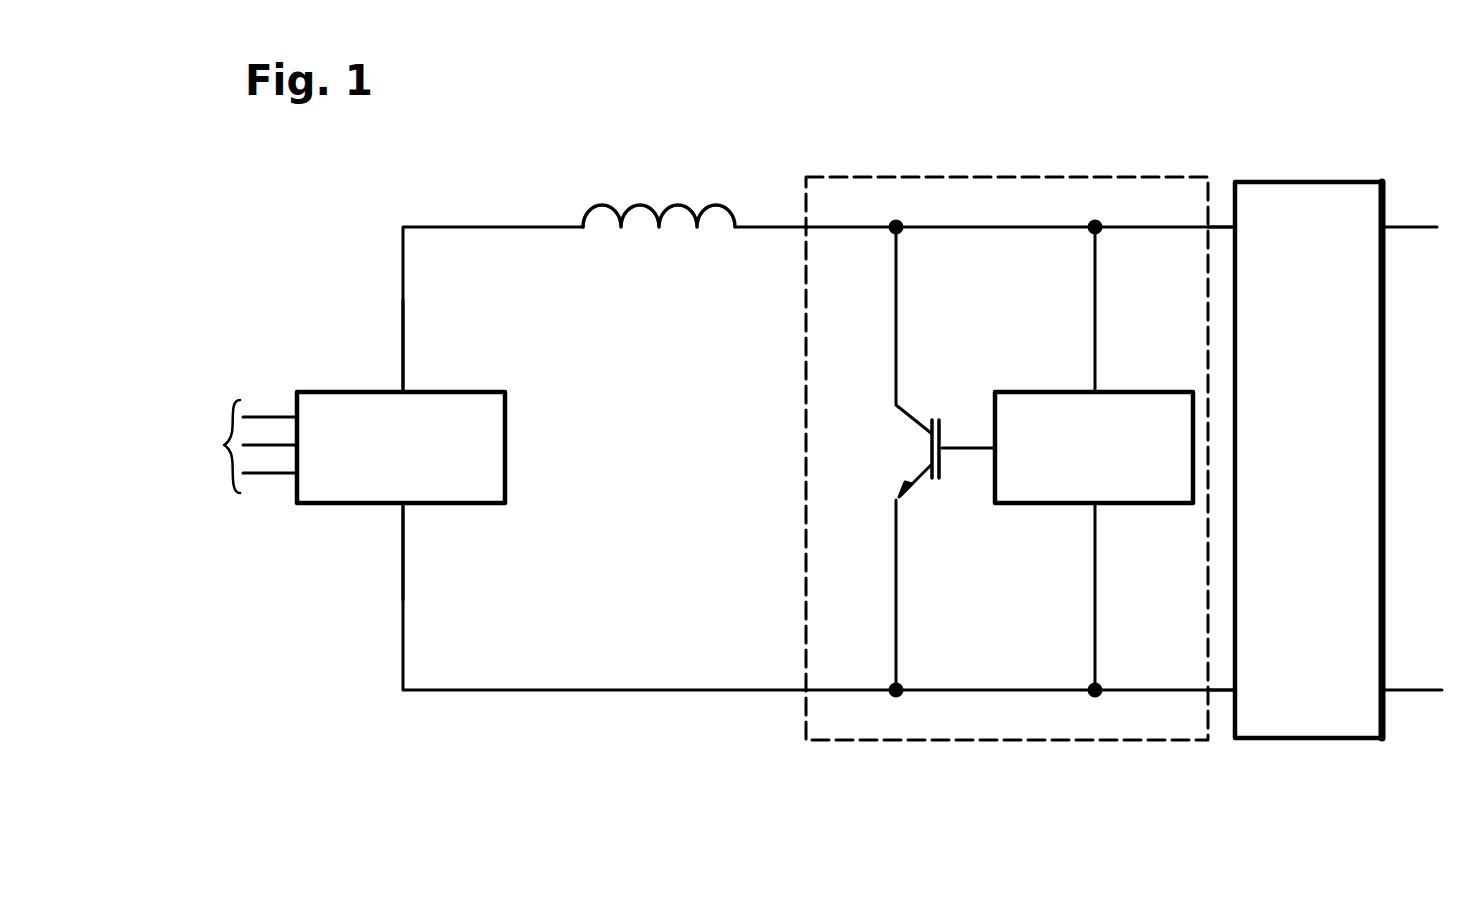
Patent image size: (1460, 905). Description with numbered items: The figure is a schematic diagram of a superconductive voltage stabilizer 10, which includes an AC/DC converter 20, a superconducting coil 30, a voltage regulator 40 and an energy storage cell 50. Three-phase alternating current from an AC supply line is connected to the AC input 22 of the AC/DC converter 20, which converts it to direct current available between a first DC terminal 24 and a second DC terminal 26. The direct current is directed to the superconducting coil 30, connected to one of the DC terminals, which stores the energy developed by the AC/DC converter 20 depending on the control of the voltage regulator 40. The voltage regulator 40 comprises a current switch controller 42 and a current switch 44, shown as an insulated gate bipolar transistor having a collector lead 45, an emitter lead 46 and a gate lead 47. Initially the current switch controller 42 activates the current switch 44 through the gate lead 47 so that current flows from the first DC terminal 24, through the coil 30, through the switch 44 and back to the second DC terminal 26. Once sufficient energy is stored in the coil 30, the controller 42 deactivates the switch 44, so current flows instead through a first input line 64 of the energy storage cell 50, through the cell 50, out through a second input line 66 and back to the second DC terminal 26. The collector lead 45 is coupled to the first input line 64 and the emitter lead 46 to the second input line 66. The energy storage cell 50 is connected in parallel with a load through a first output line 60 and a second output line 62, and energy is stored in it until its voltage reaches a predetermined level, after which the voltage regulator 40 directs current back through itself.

The superconductive voltage stabilizer 10 is at (350, 650).
The AC/DC converter 20 is at (348, 492).
The AC input 22 is at (272, 417).
The first DC terminal 24 is at (405, 390).
The second DC terminal 26 is at (405, 507).
The superconducting coil 30 is at (645, 205).
The voltage regulator 40 is at (956, 170).
The current switch controller 42 is at (1166, 398).
The current switch 44 is at (920, 479).
The collector lead 45 is at (898, 320).
The emitter lead 46 is at (896, 573).
The gate lead 47 is at (950, 447).
The energy storage cell 50 is at (1314, 176).
The first output line 60 is at (1405, 224).
The second output line 62 is at (1410, 692).
The first input line 64 is at (1222, 227).
The second input line 66 is at (1222, 692).